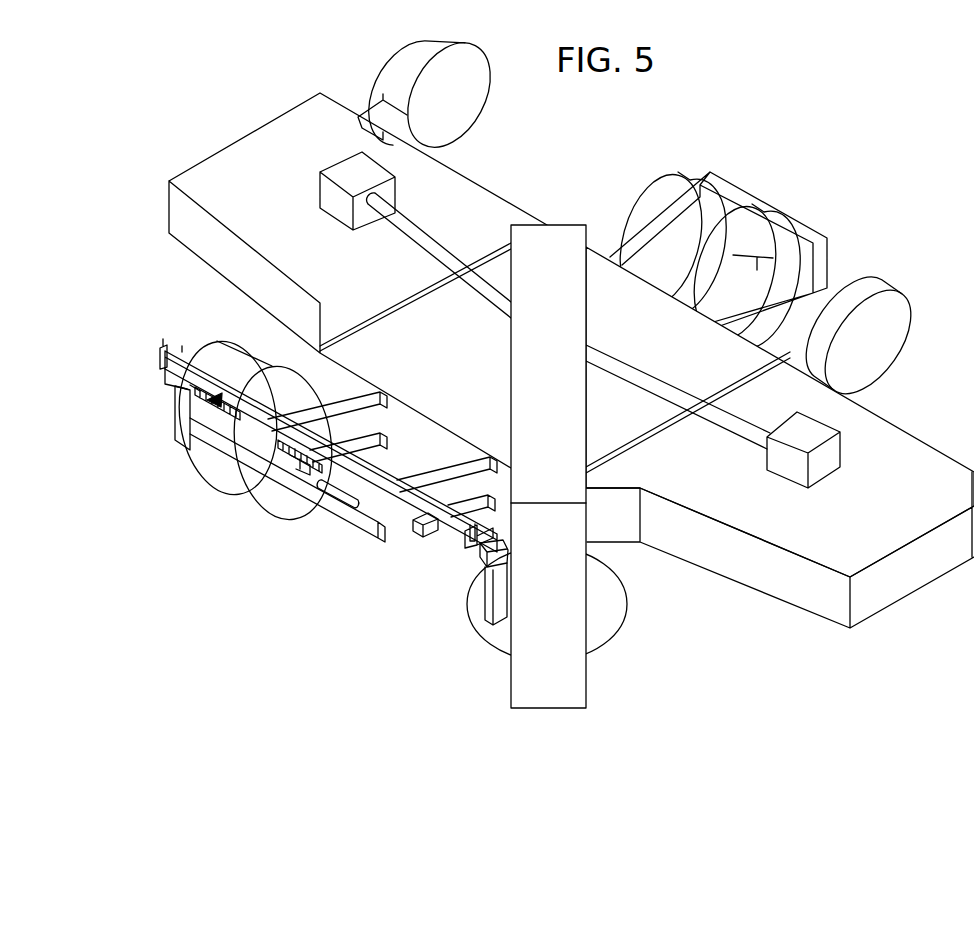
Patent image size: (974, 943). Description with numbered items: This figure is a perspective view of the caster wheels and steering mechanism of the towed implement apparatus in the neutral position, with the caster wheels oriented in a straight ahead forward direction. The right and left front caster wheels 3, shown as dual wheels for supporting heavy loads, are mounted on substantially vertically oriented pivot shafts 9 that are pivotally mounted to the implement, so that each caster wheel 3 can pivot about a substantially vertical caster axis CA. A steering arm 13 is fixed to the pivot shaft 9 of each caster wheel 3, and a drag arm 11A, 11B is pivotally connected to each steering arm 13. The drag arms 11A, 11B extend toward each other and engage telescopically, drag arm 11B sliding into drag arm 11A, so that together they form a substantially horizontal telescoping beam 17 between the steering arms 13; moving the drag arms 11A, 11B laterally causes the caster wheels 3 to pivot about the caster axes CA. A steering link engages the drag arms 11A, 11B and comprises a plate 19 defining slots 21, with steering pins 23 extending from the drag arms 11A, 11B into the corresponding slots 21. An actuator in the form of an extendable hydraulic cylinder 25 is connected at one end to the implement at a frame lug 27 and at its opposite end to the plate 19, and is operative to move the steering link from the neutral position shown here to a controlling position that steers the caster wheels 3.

The front caster wheels 3 is at (272, 474).
The pivot shafts 9 is at (186, 352).
The caster axes CA is at (182, 348).
The drag arm 11A is at (185, 383).
The drag arm 11B is at (460, 535).
The steering arm 13 is at (161, 360).
The telescoping beam 17 is at (206, 400).
The plate 19 is at (205, 436).
The slots 21 is at (275, 478).
The steering pins 23 is at (262, 433).
The hydraulic cylinder 25 is at (345, 487).
The frame lug 27 is at (413, 528).